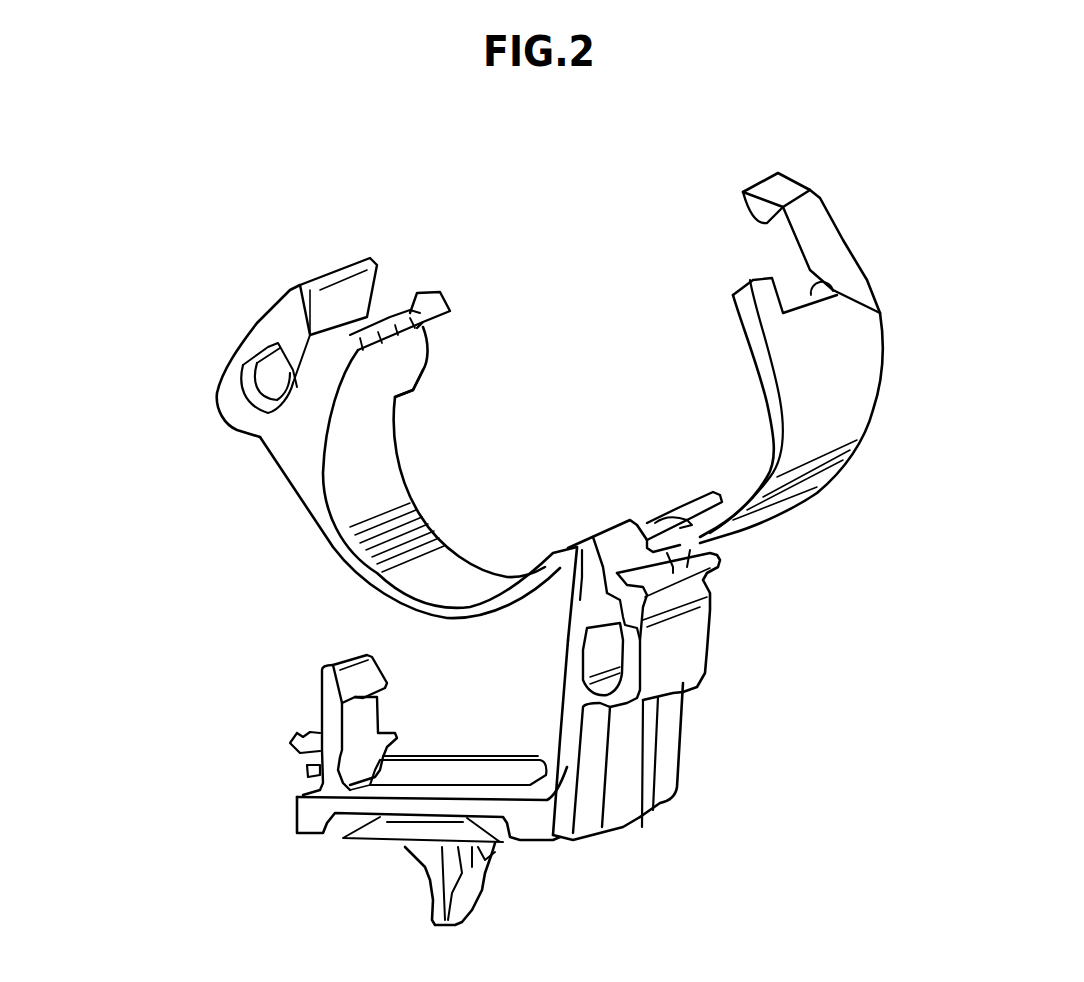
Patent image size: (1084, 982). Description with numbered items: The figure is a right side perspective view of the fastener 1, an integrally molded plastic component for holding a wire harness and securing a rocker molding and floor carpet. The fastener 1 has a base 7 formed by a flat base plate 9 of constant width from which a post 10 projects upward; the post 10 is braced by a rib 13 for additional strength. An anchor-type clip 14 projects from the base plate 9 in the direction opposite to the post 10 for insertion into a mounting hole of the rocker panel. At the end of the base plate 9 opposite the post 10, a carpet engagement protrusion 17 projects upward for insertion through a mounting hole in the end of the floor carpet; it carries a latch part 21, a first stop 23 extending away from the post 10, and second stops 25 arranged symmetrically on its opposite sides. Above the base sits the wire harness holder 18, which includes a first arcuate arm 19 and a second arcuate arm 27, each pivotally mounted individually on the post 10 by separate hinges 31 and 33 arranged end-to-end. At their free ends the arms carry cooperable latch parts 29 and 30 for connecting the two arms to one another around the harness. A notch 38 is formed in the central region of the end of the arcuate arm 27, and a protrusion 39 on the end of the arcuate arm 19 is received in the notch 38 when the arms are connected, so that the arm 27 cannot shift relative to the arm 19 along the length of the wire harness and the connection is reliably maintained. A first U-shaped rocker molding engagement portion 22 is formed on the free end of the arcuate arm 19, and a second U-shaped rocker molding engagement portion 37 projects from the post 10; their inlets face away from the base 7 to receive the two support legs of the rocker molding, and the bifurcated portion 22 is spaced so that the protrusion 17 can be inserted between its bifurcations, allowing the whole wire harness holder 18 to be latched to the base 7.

The fastener 1 is at (262, 538).
The base 7 is at (663, 817).
The base plate 9 is at (520, 827).
The post 10 is at (677, 713).
The rib 13 is at (650, 787).
The anchor-type clip 14 is at (405, 870).
The carpet engagement protrusion 17 is at (308, 676).
The wire harness holder 18 is at (563, 378).
The first arcuate arm 19 is at (395, 473).
The latch part 21 is at (385, 685).
The first U-shaped rocker molding engagement portion 22 is at (262, 322).
The first stop 23 is at (290, 735).
The second stop 25 is at (307, 770).
The second arcuate arm 27 is at (765, 407).
The latch part 29 is at (427, 350).
The latch part 30 is at (762, 218).
The hinge 31 is at (593, 547).
The hinge 33 is at (655, 517).
The second U-shaped rocker molding engagement portion 37 is at (718, 613).
The notch 38 is at (880, 313).
The protrusion 39 is at (427, 287).